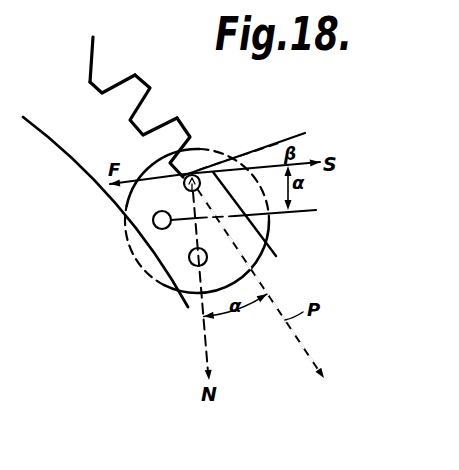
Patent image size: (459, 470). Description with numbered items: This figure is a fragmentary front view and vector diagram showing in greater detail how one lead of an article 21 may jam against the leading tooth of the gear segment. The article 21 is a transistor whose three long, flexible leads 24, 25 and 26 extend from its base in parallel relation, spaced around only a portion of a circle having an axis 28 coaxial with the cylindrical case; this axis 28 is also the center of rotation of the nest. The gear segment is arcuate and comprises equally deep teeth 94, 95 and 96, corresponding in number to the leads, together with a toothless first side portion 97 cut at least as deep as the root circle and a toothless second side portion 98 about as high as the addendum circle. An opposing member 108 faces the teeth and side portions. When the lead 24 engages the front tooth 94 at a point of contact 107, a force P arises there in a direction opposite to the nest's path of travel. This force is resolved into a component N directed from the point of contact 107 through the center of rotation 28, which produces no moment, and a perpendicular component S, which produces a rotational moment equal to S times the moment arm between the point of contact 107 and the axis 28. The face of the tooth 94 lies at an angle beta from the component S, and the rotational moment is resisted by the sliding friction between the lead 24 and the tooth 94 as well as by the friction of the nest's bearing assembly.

The article 21 is at (163, 289).
The lead 24 is at (184, 190).
The lead 25 is at (153, 225).
The lead 26 is at (207, 257).
The axis 28 is at (190, 222).
The tooth 94 is at (186, 172).
The tooth 95 is at (130, 120).
The tooth 96 is at (92, 55).
The first side portion 97 is at (278, 255).
The second side portion 98 is at (94, 38).
The point of contact 107 is at (287, 134).
The opposing member 108 is at (60, 148).